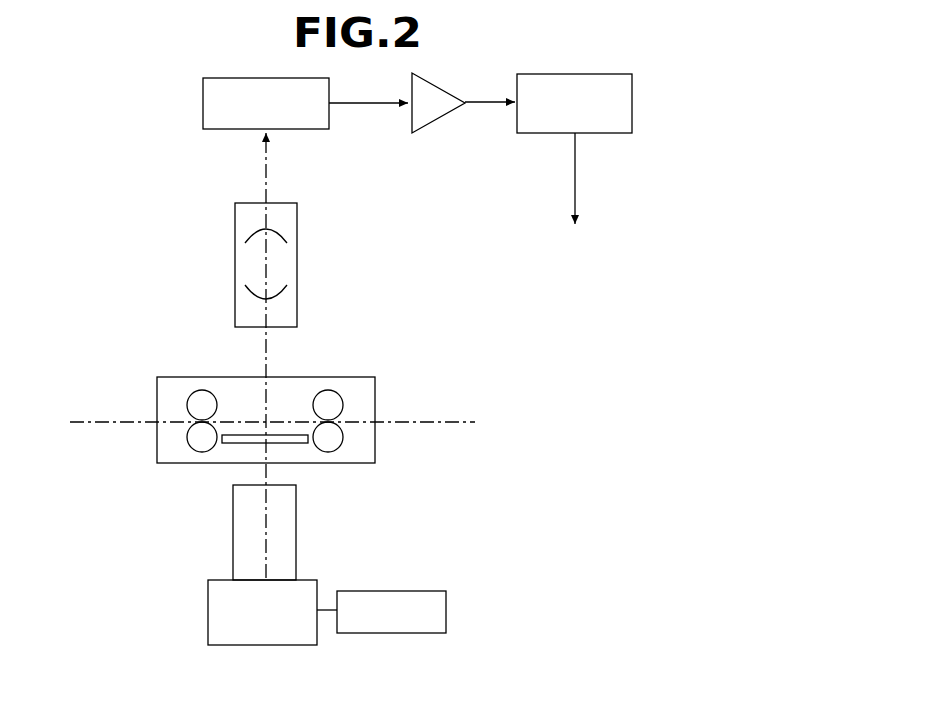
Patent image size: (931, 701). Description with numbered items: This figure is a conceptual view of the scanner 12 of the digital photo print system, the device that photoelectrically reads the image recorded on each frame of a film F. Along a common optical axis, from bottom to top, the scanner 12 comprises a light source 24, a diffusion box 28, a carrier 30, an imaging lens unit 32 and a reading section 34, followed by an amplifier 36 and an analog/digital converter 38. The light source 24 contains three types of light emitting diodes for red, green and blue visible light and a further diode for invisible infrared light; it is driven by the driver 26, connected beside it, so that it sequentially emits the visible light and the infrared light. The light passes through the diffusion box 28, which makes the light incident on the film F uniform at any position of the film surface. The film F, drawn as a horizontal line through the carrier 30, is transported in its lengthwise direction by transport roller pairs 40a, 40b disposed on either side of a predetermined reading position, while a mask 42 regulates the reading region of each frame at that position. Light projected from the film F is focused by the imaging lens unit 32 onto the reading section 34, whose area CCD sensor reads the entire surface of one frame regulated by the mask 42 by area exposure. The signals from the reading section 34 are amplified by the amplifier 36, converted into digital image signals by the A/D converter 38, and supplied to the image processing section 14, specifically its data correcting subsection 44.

The scanner 12 is at (115, 600).
The image processing section 14 is at (559, 197).
The data correcting subsection 44 is at (600, 246).
The light source 24 is at (270, 646).
The driver 26 is at (446, 608).
The diffusion box 28 is at (296, 547).
The carrier 30 is at (375, 385).
The imaging lens unit 32 is at (297, 275).
The reading section 34 is at (305, 130).
The amplifier 36 is at (432, 113).
The A/D converter 38 is at (632, 100).
The transport roller pair 40a is at (197, 440).
The transport roller pair 40b is at (335, 436).
The mask 42 is at (235, 443).
The film F is at (455, 418).